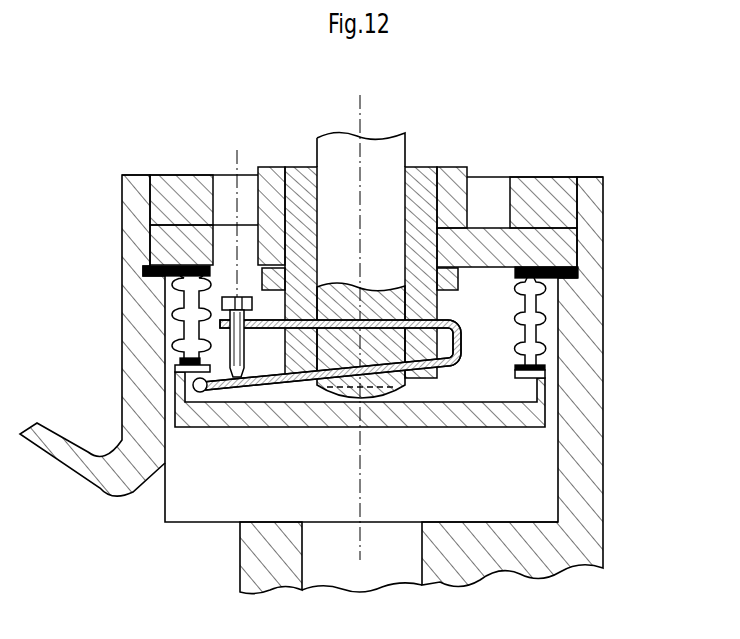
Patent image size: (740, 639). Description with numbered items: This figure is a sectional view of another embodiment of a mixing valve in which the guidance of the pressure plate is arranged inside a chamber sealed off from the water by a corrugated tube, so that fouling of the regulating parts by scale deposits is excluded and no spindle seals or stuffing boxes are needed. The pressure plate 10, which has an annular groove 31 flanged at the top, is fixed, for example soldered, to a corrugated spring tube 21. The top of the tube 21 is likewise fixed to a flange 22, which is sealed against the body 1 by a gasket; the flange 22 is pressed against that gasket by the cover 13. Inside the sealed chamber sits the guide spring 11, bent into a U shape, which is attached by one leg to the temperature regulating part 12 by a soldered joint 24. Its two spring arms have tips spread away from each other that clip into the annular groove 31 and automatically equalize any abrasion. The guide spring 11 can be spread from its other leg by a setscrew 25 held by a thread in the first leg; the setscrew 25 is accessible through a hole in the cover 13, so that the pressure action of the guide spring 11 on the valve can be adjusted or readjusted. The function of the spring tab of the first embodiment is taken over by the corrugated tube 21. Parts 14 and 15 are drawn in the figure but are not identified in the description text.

The body 1 is at (140, 373).
The pressure plate 10 is at (275, 427).
The guide spring 11 is at (220, 318).
The temperature regulating part 12 is at (420, 180).
The cover 13 is at (177, 247).
The cover block 14 is at (173, 205).
The rod 15 is at (337, 151).
The corrugated spring tube 21 is at (545, 313).
The flange 22 is at (545, 265).
The soldered joint 24 is at (440, 321).
The setscrew 25 is at (234, 298).
The annular groove 31 is at (572, 388).